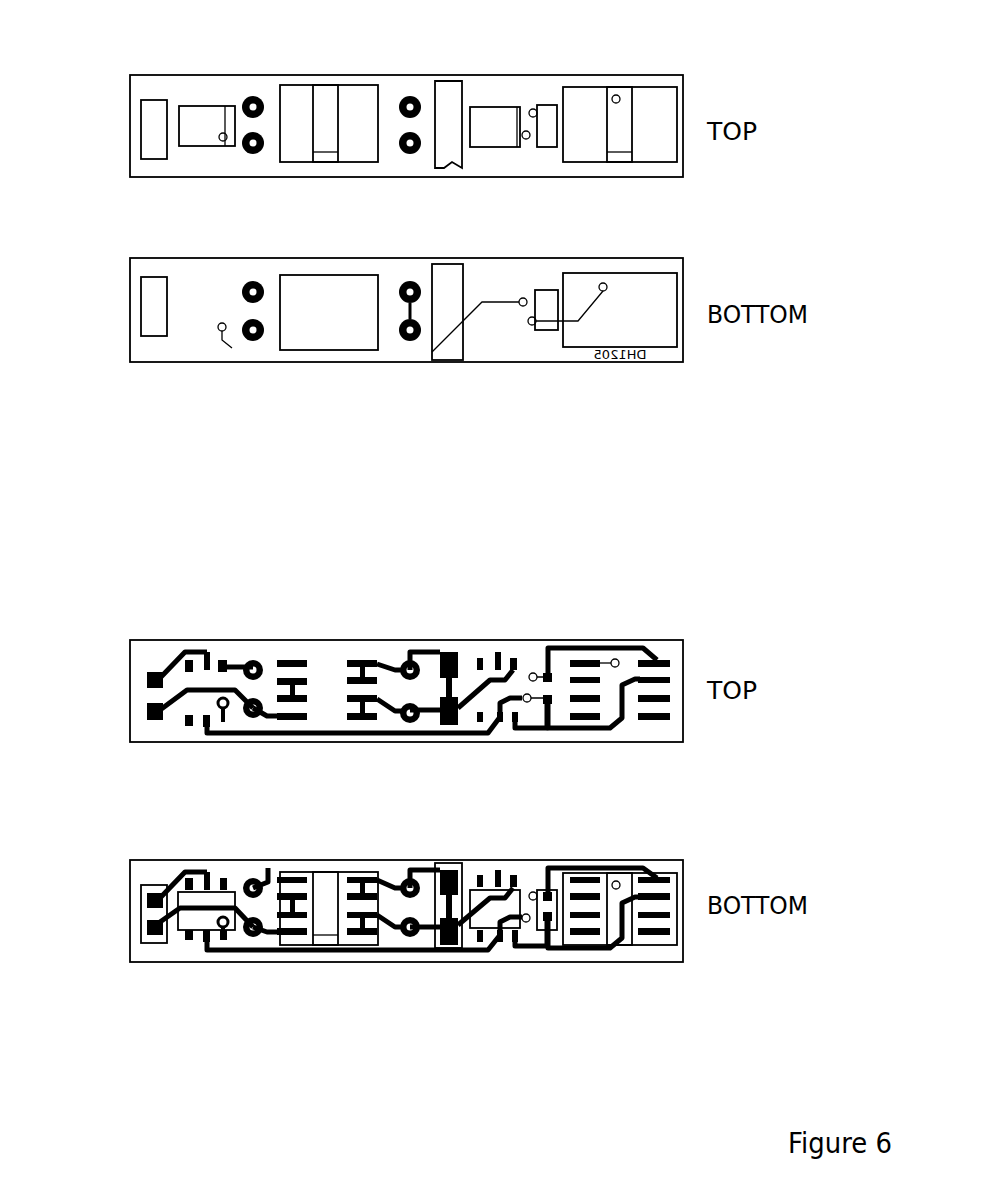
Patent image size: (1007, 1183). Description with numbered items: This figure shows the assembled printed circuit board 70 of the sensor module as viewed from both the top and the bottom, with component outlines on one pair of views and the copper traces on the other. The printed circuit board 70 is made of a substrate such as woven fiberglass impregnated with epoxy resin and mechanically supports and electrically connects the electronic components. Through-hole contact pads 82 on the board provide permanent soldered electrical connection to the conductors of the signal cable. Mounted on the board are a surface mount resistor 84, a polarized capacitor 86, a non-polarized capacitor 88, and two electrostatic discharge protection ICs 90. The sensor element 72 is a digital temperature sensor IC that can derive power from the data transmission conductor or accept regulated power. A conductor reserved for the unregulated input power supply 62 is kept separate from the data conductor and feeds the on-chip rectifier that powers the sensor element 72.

The printed circuit board 70 is at (120, 130).
The non-polarized capacitor 88 is at (153, 168).
The electrostatic discharge protection ICs 90 is at (200, 100).
The polarized capacitor 86 is at (447, 178).
The surface mount resistor 84 is at (547, 156).
The sensor element 72 is at (617, 171).
The through-hole contact pads 82 is at (400, 303).
The unregulated input power supply 62 is at (503, 645).